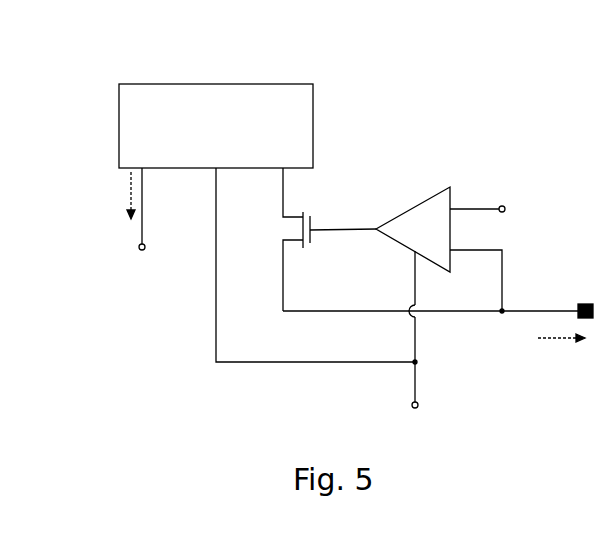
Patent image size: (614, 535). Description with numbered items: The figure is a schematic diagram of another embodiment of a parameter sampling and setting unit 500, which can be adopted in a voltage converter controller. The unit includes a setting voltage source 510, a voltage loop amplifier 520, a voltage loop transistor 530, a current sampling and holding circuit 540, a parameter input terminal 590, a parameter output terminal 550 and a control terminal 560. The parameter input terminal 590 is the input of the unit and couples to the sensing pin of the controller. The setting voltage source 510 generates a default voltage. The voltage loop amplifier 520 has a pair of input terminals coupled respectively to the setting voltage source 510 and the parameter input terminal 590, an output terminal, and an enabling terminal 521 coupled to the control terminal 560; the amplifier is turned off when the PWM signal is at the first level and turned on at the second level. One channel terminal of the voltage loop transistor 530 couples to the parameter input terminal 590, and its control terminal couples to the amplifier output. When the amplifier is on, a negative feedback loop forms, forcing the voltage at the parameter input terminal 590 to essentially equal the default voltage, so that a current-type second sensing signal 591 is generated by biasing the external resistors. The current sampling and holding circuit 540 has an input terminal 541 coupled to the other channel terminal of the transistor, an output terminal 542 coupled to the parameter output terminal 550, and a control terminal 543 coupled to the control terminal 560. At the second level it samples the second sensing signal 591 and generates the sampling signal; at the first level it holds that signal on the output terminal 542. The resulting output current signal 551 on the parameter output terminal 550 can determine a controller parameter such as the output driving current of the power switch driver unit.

The parameter sampling and setting unit 500 is at (67, 37).
The setting voltage source 510 is at (502, 205).
The voltage loop amplifier 520 is at (444, 234).
The enabling terminal 521 is at (411, 253).
The voltage loop transistor 530 is at (281, 229).
The current sampling and holding circuit 540 is at (295, 124).
The input terminal 541 is at (300, 162).
The output terminal 542 is at (157, 162).
The control terminal 543 is at (230, 162).
The parameter output terminal 550 is at (143, 251).
The output current signal 551 is at (128, 196).
The control terminal 560 is at (411, 405).
The parameter input terminal 590 is at (585, 300).
The second sensing signal 591 is at (556, 345).